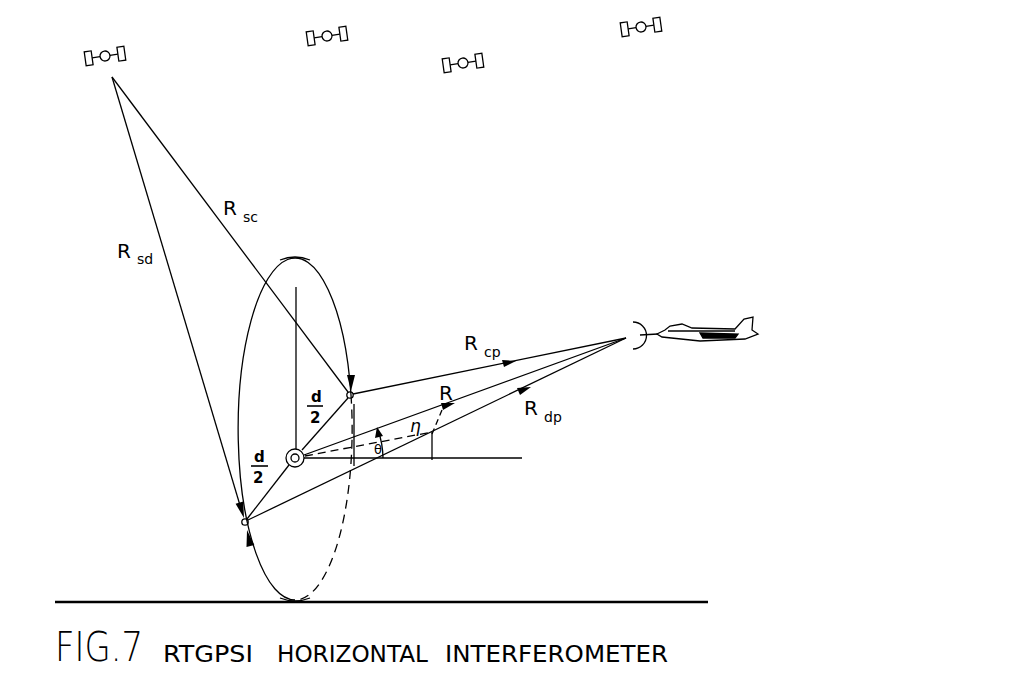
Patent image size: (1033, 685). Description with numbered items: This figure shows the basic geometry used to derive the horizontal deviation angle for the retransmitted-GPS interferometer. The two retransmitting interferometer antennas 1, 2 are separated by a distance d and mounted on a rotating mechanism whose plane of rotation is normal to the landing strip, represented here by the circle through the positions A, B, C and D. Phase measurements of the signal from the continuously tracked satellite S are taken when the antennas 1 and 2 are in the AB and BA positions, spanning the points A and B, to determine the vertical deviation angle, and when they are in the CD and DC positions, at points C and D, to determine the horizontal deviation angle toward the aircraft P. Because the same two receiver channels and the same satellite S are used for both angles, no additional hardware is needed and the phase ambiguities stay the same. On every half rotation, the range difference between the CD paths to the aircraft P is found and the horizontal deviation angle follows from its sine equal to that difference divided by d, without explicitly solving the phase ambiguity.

The interferometer antenna 1 is at (486, 375).
The interferometer antenna 2 is at (434, 440).
The satellite S is at (102, 72).
The aircraft P is at (695, 351).
The AB position A is at (295, 244).
The BA position B is at (295, 587).
The CD position C is at (362, 377).
The DC position D is at (239, 539).